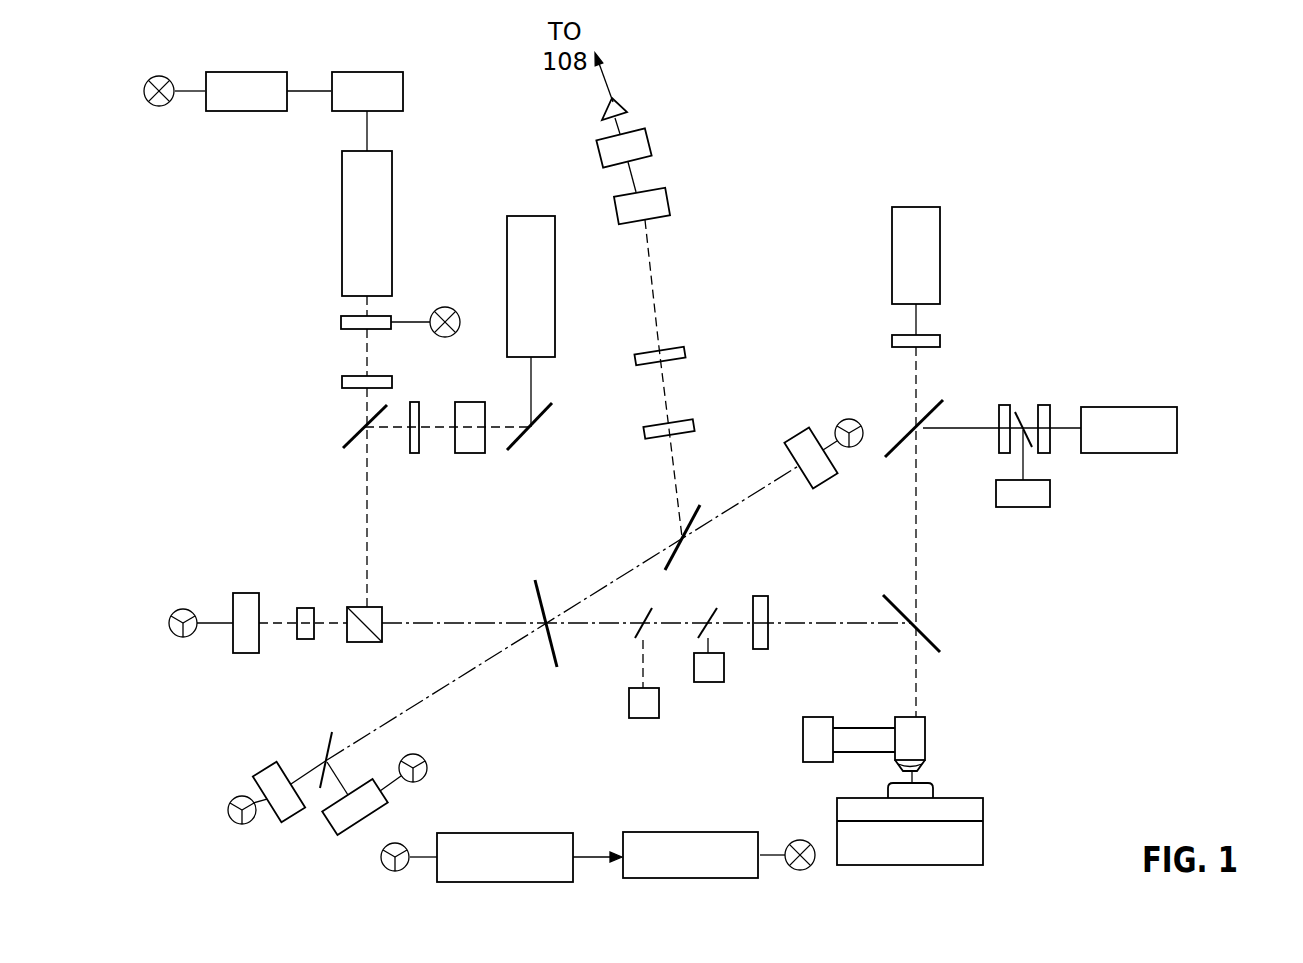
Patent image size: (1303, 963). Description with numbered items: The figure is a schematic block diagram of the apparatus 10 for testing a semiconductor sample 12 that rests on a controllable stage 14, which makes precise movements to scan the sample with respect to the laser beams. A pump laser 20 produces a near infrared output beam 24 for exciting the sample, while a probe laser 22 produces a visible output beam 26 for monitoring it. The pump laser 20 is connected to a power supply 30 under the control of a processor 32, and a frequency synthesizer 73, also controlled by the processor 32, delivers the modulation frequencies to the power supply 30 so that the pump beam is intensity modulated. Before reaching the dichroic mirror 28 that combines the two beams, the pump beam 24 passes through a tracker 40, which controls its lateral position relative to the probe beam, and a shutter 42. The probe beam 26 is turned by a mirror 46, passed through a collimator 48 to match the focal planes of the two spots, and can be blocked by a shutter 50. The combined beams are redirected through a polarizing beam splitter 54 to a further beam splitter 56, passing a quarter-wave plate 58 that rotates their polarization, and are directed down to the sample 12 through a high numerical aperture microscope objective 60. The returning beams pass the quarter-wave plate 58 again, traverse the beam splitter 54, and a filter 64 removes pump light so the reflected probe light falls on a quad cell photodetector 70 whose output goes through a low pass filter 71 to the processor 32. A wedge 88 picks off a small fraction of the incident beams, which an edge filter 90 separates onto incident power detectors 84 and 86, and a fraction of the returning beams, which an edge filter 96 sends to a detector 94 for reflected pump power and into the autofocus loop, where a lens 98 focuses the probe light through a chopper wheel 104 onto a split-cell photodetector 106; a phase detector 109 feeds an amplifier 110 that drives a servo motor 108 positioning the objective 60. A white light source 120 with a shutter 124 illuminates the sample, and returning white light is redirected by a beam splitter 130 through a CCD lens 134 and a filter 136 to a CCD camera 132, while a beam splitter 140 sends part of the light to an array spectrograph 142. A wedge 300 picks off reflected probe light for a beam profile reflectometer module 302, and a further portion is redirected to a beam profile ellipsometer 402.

The apparatus 10 is at (858, 140).
The semiconductor sample 12 is at (933, 790).
The controllable stage 14 is at (983, 832).
The pump laser 20 is at (393, 178).
The probe laser 22 is at (556, 262).
The pump output beam 24 is at (368, 340).
The probe output beam 26 is at (527, 392).
The dichroic mirror 28 is at (345, 438).
The power supply 30 is at (345, 112).
The processor 32 is at (662, 832).
The tracker 40 is at (352, 330).
The shutter 42 is at (347, 389).
The mirror 46 is at (527, 437).
The collimator 48 is at (477, 453).
The shutter 50 is at (408, 440).
The polarizing beam splitter 54 is at (382, 612).
The beam splitter 56 is at (920, 627).
The quarter-wave plate 58 is at (770, 610).
The microscope objective 60 is at (925, 740).
The filter 64 is at (305, 640).
The photodetector 70 is at (247, 593).
The low pass filter 71 is at (538, 833).
The frequency synthesizer 73 is at (248, 112).
The incident power detector 84 is at (267, 767).
The incident power detector 86 is at (352, 788).
The wedge 88 is at (542, 600).
The edge filter 90 is at (332, 742).
The detector 94 is at (827, 482).
The edge filter 96 is at (700, 512).
The lens 98 is at (683, 435).
The chopper wheel 104 is at (677, 362).
The split-cell photodetector 106 is at (668, 203).
The servo motor 108 is at (802, 740).
The phase detector 109 is at (652, 138).
The amplifier 110 is at (623, 103).
The white light source 120 is at (892, 263).
The shutter 124 is at (907, 335).
The beam splitter 130 is at (902, 437).
The CCD camera 132 is at (1178, 428).
The CCD lens 134 is at (997, 440).
The filter 136 is at (1052, 417).
The beam splitter 140 is at (1023, 410).
The array spectrograph 142 is at (1007, 508).
The wedge 300 is at (710, 610).
The beam profile reflectometer module 302 is at (710, 683).
The beam profile ellipsometer 402 is at (643, 720).